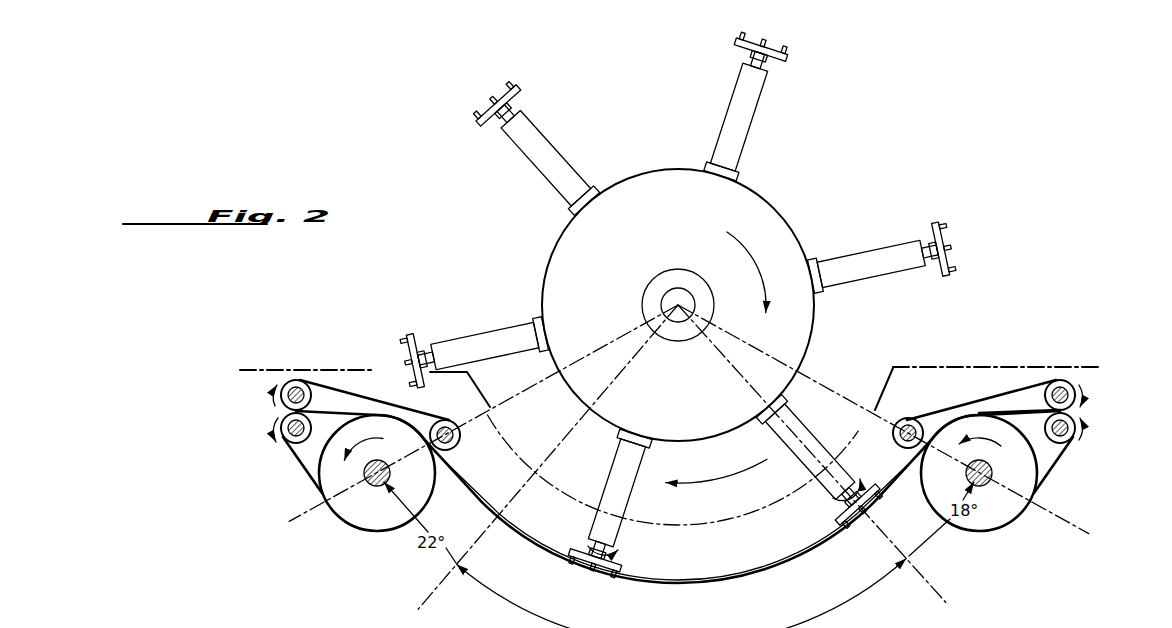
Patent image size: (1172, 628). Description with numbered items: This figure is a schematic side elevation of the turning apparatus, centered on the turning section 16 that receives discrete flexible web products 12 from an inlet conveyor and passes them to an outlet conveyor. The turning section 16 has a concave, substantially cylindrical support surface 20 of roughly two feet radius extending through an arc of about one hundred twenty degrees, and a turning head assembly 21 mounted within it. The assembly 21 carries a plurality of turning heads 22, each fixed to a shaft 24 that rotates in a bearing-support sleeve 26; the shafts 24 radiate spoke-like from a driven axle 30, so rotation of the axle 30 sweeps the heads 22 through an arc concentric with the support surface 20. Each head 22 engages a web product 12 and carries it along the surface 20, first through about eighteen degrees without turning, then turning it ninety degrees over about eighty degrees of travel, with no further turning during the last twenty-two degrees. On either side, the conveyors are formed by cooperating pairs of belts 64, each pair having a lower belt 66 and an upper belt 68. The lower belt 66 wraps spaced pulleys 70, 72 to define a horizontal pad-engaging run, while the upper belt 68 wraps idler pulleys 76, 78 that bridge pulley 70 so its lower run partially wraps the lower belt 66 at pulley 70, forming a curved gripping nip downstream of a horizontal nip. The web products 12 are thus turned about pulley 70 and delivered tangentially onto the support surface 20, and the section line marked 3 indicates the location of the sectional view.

The section line 3- 3 is at (267, 368).
The web product 12 is at (538, 546).
The turning section 16 is at (689, 279).
The substantially cylindrical support surface 20 is at (750, 580).
The turning head assembly 21 is at (702, 296).
The turning head 22 is at (487, 104).
The shaft 24 is at (765, 62).
The bearing-support sleeve 26 is at (549, 151).
The driven axle 30 is at (676, 298).
The belts 64 is at (977, 411).
The lower belt 66 is at (303, 469).
The upper belt 68 is at (335, 387).
The pulley 70 is at (1005, 523).
The pulley 72 is at (1079, 432).
The idler pulley 76 is at (907, 417).
The upper idler pulley 78 is at (1079, 392).